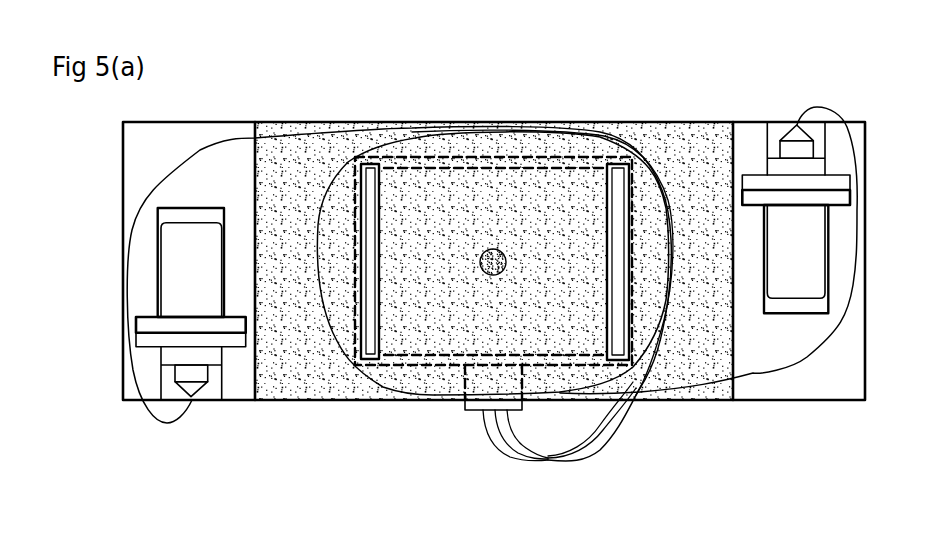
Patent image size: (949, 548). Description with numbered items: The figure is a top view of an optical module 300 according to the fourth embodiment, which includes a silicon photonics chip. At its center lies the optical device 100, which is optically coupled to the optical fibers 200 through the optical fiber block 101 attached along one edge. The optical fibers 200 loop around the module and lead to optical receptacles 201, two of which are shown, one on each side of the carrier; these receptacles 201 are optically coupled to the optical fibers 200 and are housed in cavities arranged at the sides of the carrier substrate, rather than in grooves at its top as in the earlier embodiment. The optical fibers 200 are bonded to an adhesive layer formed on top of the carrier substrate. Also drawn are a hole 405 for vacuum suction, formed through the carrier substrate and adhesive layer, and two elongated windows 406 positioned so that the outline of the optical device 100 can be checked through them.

The optical device 100 is at (345, 401).
The optical fiber block 101 is at (463, 412).
The optical fibers 200 is at (557, 463).
The optical receptacles 201 is at (212, 355).
The optical module 300 is at (882, 110).
The hole 405 is at (494, 249).
The windows 406 is at (372, 163).